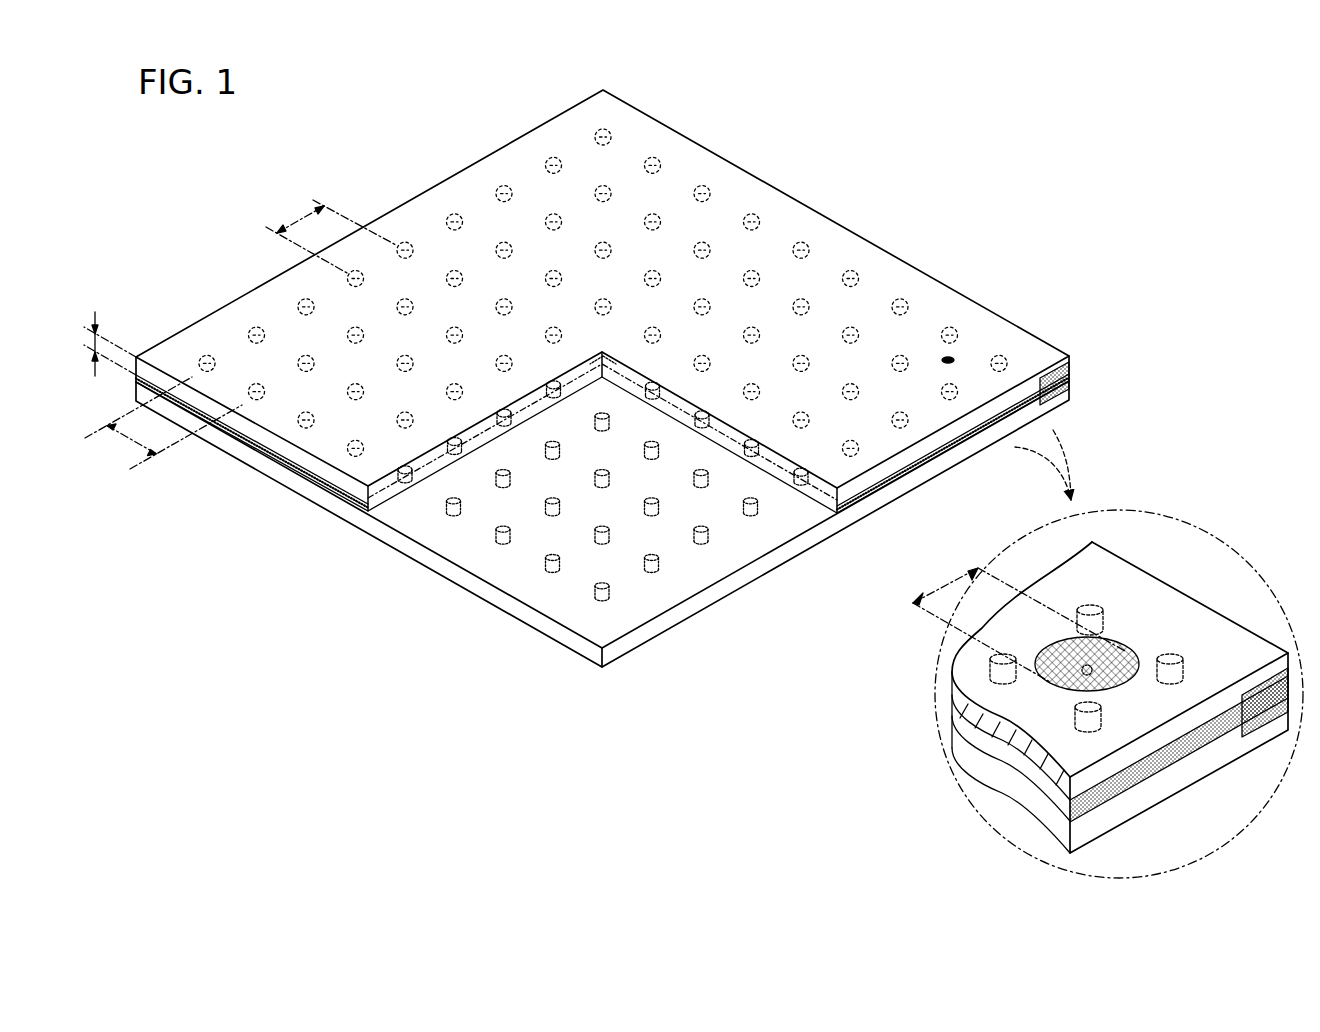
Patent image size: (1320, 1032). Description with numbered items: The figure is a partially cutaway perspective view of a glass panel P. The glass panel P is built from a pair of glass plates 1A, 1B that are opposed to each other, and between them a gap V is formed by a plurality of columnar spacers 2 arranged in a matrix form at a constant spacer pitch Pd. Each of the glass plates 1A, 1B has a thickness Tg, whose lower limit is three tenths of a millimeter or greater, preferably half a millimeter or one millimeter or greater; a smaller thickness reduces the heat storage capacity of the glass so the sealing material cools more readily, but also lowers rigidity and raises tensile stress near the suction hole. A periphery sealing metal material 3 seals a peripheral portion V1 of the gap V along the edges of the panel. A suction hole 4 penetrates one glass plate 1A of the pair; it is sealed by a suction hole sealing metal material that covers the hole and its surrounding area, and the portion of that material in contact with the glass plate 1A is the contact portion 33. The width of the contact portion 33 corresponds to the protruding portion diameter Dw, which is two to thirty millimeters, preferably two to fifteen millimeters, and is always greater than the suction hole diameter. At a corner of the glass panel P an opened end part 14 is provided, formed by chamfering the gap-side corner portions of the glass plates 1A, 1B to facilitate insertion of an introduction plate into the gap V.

The glass panel P is at (910, 152).
The glass plate 1A is at (886, 285).
The glass plate 1B is at (482, 592).
The columnar spacers 2 is at (760, 217).
The periphery sealing metal material 3 is at (318, 486).
The suction hole 4 is at (952, 355).
The opened end part 14 is at (1080, 379).
The contact portion 33 is at (1090, 675).
The gap V is at (428, 478).
The peripheral portion V1 is at (932, 488).
The spacer pitch Pd is at (240, 327).
The thickness Tg is at (90, 330).
The protruding portion diameter Dw is at (1018, 620).